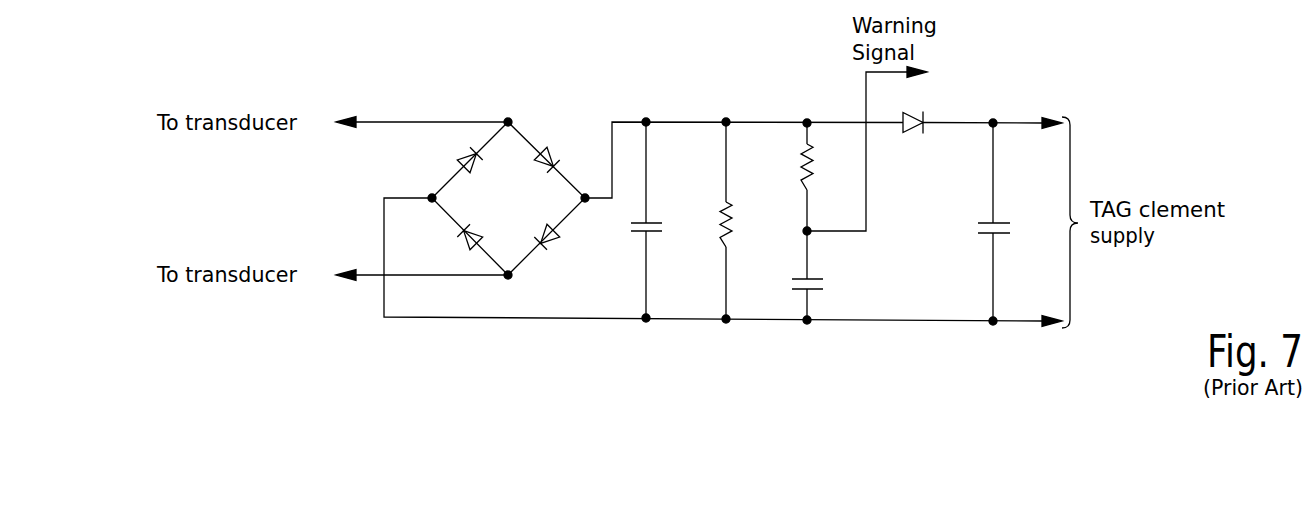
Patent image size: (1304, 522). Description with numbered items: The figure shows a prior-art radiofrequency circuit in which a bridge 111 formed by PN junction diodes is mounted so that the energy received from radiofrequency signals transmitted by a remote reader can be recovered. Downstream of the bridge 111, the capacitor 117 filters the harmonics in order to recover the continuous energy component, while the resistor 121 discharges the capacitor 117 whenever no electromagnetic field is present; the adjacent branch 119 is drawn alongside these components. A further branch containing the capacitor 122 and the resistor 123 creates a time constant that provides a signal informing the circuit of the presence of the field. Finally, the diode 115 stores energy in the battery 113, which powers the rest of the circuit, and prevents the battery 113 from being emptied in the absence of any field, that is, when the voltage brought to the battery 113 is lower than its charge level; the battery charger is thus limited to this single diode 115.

The bridge 111 is at (508, 118).
The battery 113 is at (978, 225).
The diode 115 is at (913, 112).
The capacitor 117 is at (633, 232).
The load branch 119 is at (726, 119).
The resistor 121 is at (720, 213).
The capacitor 122 is at (823, 287).
The resistor 123 is at (807, 148).